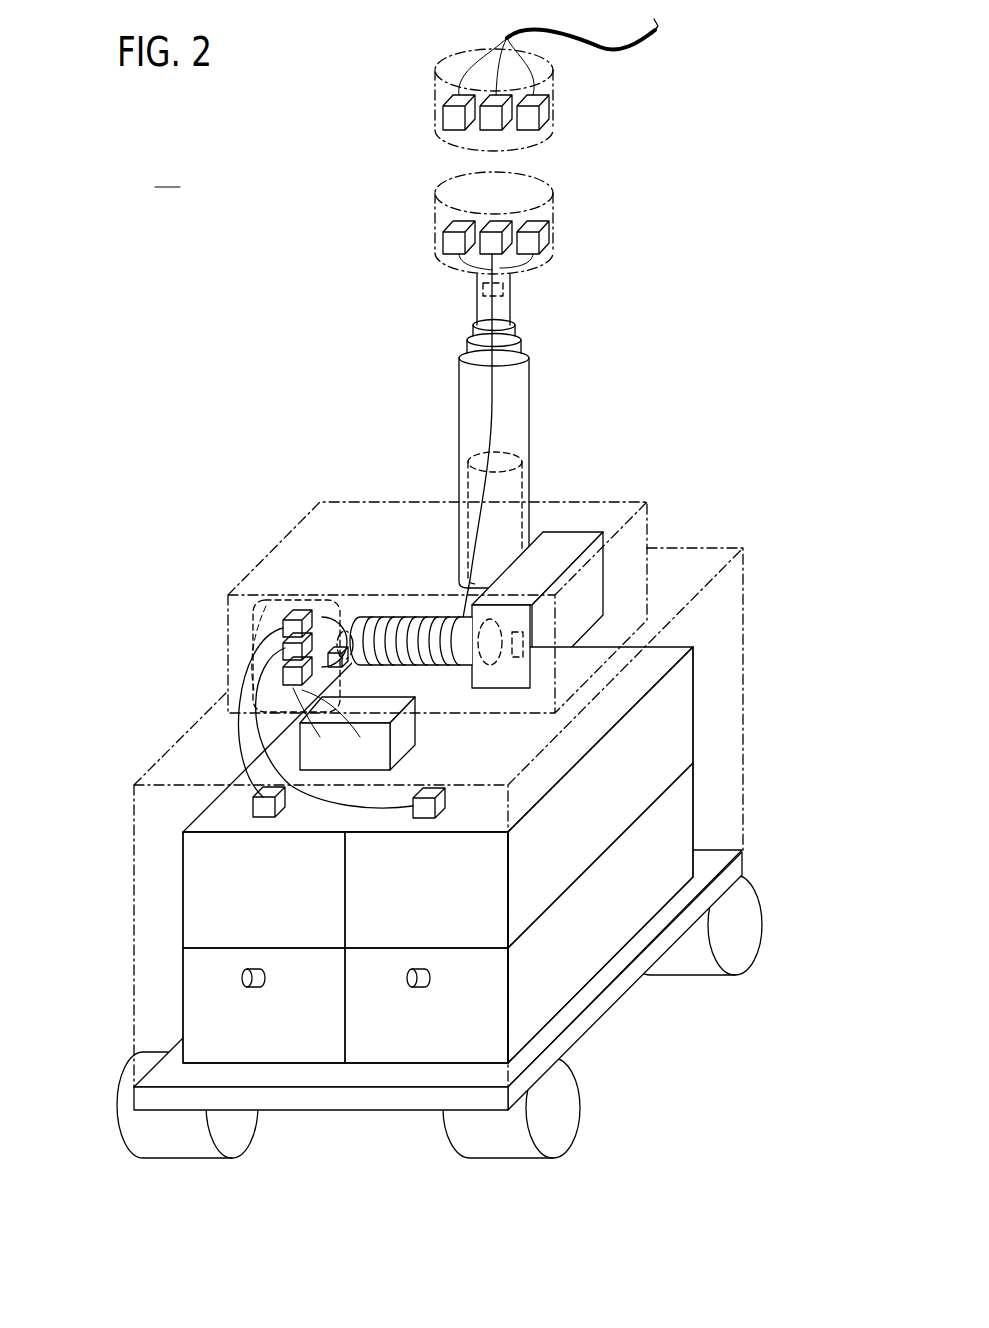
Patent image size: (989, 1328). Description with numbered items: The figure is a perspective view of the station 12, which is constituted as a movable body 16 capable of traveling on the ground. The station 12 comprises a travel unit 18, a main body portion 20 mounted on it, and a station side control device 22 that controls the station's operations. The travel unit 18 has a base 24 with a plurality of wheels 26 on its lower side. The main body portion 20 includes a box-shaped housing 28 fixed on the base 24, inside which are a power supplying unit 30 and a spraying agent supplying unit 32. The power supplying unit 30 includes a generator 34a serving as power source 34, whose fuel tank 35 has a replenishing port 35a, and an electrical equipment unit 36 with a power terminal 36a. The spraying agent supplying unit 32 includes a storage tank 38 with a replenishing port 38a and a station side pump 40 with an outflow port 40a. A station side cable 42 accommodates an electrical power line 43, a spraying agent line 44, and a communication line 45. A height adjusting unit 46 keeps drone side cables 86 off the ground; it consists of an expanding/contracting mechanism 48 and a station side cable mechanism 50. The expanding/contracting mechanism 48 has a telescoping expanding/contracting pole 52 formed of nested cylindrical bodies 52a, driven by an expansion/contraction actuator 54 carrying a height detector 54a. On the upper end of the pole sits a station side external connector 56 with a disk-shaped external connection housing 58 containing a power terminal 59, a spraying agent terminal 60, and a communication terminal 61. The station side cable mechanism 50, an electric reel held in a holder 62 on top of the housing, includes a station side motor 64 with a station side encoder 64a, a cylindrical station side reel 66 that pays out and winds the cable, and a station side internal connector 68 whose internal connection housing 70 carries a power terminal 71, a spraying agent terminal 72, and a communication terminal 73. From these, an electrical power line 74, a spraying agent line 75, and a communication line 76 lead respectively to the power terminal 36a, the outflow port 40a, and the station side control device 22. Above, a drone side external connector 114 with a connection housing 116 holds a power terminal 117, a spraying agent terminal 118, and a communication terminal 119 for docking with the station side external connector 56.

The station 12 is at (167, 174).
The movable body 16 is at (392, 940).
The travel unit 18 is at (439, 1042).
The main body portion 20 is at (409, 817).
The station side control device 22 is at (416, 745).
The base 24 is at (368, 1097).
The wheels 26 is at (445, 1125).
The housing 28 is at (178, 731).
The power supplying unit 30 is at (184, 972).
The spraying agent supplying unit 32 is at (528, 873).
The power source 34 is at (206, 1044).
The generator 34a is at (206, 1044).
The fuel tank 35 is at (282, 1050).
The replenishing port 35a is at (265, 978).
The electrical equipment unit 36 is at (208, 867).
The power terminal 36a is at (275, 815).
The storage tank 38 is at (519, 913).
The replenishing port 38a is at (430, 978).
The station side pump 40 is at (525, 854).
The outflow port 40a is at (436, 816).
The station side cable 42 is at (489, 412).
The electrical power line 43 is at (328, 617).
The spraying agent line 44 is at (347, 633).
The communication line 45 is at (342, 668).
The height adjusting unit 46 is at (492, 471).
The expanding/contracting mechanism 48 is at (469, 436).
The station side cable mechanism 50 is at (540, 566).
The expanding/contracting pole 52 is at (429, 431).
The cylindrical bodies 52a is at (459, 380).
The expansion/contraction actuator 54 is at (466, 470).
The height detector 54a is at (483, 290).
The station side external connector 56 is at (501, 221).
The external connection housing 58 is at (440, 183).
The power terminal 59 is at (443, 243).
The spraying agent terminal 60 is at (492, 250).
The communication terminal 61 is at (540, 243).
The holder 62 is at (302, 520).
The station side motor 64 is at (535, 670).
The station side encoder 64a is at (527, 642).
The station side reel 66 is at (410, 617).
The station side internal connector 68 is at (257, 621).
The internal connection housing 70 is at (252, 600).
The power terminal 71 is at (297, 614).
The spraying agent terminal 72 is at (283, 652).
The communication terminal 73 is at (340, 726).
The electrical power line 74 is at (248, 678).
The spraying agent line 75 is at (385, 806).
The communication line 76 is at (312, 725).
The drone side cable 86 is at (625, 46).
The drone side external connector 114 is at (503, 100).
The connection housing 116 is at (442, 60).
The power terminal 117 is at (443, 116).
The spraying agent terminal 118 is at (492, 126).
The communication terminal 119 is at (542, 118).